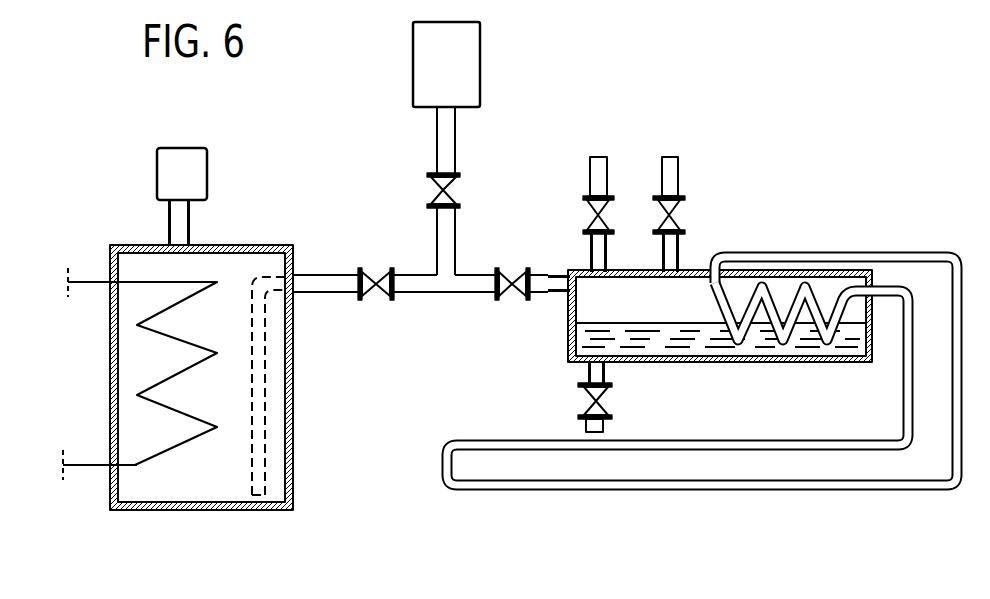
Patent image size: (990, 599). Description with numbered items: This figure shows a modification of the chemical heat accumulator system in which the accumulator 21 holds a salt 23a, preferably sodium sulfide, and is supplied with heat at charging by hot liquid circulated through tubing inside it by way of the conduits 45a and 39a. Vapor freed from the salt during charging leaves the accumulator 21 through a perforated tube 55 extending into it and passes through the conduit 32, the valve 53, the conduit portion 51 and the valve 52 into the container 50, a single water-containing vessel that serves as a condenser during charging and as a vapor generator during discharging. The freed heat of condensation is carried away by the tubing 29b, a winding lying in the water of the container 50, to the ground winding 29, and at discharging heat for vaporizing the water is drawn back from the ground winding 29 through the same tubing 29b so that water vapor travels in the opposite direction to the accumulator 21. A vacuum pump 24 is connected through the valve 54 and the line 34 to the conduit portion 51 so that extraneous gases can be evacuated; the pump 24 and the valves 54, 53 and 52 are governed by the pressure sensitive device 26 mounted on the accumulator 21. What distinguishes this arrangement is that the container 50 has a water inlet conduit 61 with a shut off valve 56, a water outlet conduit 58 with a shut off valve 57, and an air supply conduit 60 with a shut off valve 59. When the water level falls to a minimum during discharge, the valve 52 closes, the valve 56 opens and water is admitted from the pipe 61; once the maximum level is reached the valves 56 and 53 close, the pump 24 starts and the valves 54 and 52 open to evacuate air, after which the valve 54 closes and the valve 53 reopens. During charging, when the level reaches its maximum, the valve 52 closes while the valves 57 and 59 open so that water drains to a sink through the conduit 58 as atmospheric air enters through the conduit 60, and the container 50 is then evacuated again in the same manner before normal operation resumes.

The accumulator 21 is at (291, 415).
The salt 23a is at (197, 488).
The vacuum pump 24 is at (458, 69).
The pressure sensitive device 26 is at (177, 148).
The ground winding 29 is at (628, 492).
The tubing 29b is at (745, 337).
The conduit 32 is at (321, 275).
The connecting line to control unit 34 is at (455, 128).
The conduit 39a is at (88, 463).
The conduit 45a is at (90, 282).
The container 50 is at (688, 362).
The conduit 51 is at (472, 275).
The valve 52 is at (522, 293).
The valve 53 is at (373, 298).
The valve 54 is at (448, 194).
The perforated tube 55 is at (273, 377).
The shut off valve 56 is at (592, 223).
The shut off valve 57 is at (604, 405).
The outlet conduit 58 is at (585, 425).
The shut off valve 59 is at (680, 222).
The air supply conduit 60 is at (678, 170).
The inlet conduit 61 is at (590, 170).